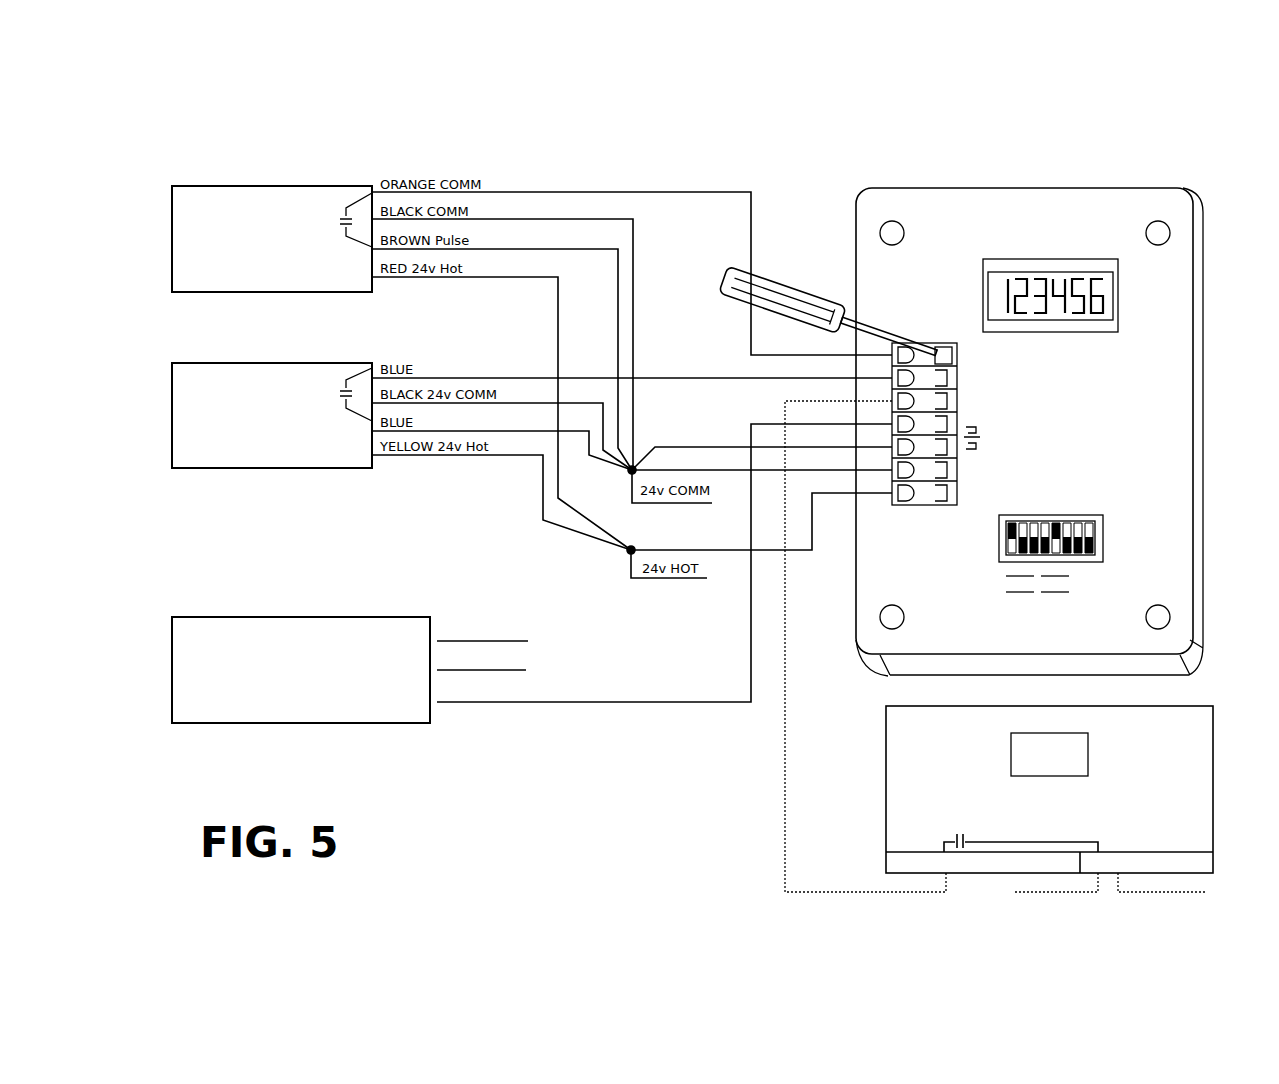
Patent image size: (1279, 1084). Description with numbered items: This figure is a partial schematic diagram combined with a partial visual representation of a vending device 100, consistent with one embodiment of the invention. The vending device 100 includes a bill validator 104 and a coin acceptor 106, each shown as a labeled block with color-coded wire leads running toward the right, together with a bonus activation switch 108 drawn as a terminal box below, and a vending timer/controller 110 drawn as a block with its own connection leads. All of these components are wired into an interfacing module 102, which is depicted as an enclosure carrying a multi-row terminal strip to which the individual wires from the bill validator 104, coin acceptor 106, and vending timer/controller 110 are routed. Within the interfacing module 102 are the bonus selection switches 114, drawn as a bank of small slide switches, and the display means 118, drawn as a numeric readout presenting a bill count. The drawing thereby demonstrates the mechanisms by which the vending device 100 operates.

The vending device 100 is at (868, 110).
The interfacing module 102 is at (977, 185).
The bill validator 104 is at (238, 185).
The coin acceptor 106 is at (260, 468).
The bonus activation switch 108 is at (884, 817).
The vending timer/controller 110 is at (314, 617).
The bonus selection switches 114 is at (1110, 549).
The display means 118 is at (978, 300).